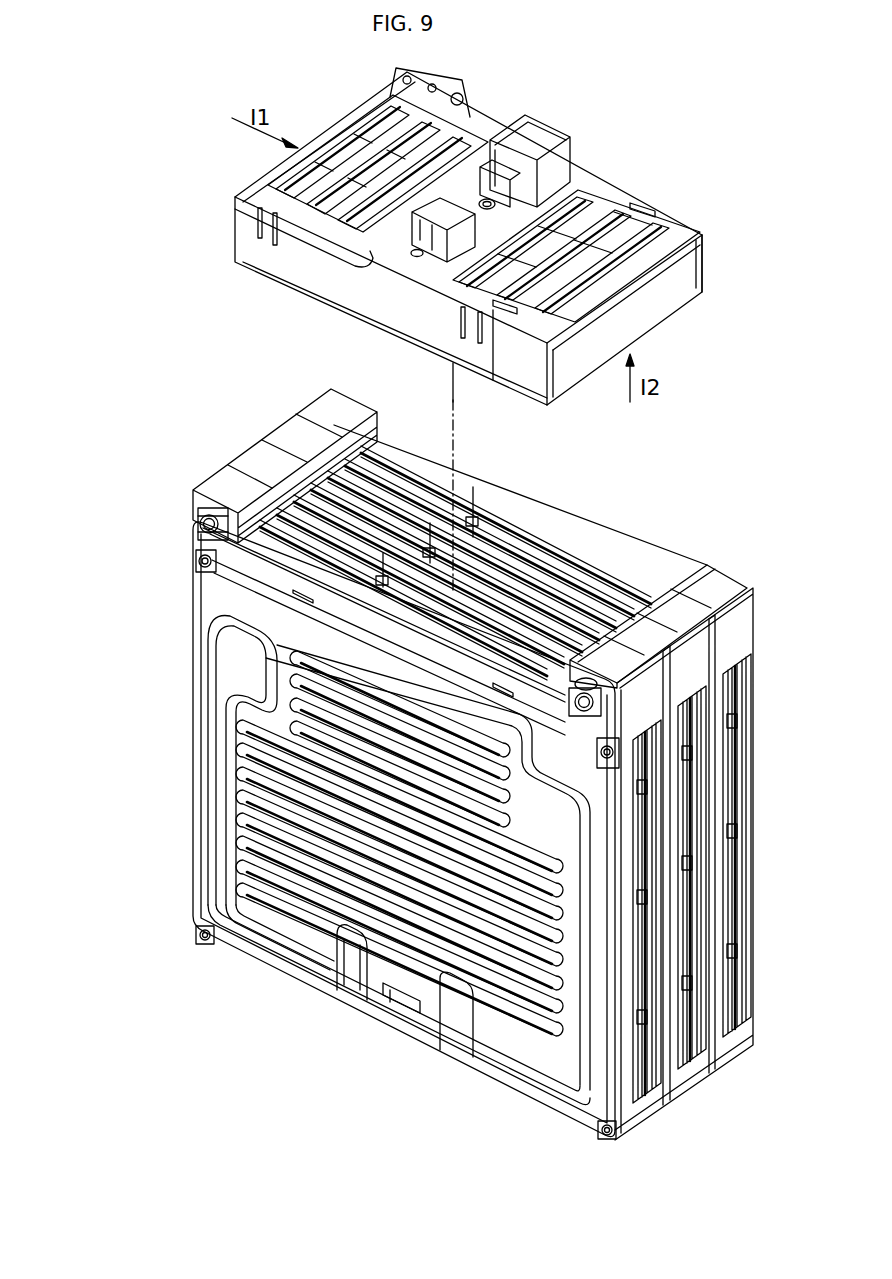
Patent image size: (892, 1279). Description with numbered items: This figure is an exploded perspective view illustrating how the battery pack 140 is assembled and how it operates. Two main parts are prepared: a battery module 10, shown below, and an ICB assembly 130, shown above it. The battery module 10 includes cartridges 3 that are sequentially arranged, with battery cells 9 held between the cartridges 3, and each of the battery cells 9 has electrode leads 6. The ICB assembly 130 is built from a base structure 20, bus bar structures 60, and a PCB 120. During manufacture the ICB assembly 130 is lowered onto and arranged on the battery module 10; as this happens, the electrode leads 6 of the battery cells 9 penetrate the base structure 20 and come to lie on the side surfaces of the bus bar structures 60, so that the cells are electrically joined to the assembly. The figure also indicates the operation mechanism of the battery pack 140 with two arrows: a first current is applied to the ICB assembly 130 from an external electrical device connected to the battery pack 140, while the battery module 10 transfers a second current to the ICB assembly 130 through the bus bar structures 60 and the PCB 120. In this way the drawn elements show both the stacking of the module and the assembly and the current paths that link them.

The battery pack 140 is at (96, 758).
The ICB assembly 130 is at (172, 232).
The battery module 10 is at (172, 766).
The PCB 120 is at (568, 188).
The bus bar structures 60 is at (650, 247).
The base structure 20 is at (706, 243).
The cartridges 3 is at (237, 470).
The electrode leads 6 is at (624, 570).
The battery cells 9 is at (421, 583).